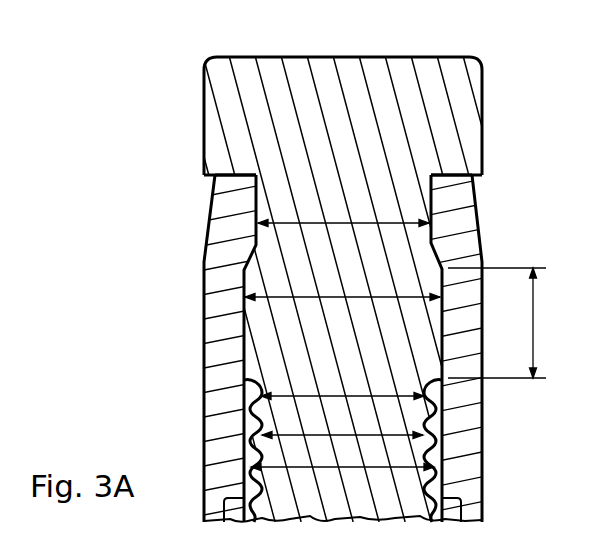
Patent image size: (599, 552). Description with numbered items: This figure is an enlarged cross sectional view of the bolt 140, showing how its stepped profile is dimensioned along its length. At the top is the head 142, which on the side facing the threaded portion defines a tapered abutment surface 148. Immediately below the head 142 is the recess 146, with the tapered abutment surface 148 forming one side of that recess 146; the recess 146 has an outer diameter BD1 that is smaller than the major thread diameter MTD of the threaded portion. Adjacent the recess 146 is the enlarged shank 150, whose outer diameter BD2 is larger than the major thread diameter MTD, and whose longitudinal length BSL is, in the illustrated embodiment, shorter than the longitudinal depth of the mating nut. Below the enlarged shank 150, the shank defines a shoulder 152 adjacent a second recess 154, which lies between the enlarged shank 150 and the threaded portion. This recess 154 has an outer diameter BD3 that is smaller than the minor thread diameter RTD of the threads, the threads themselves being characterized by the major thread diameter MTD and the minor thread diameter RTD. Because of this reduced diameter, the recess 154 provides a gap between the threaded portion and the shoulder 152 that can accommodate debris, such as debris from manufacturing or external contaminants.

The bolt 140 is at (243, 76).
The head 142 is at (398, 75).
The recess 146 is at (474, 240).
The tapered abutment surface 148 is at (213, 203).
The enlarged shank 150 is at (207, 300).
The shoulder 152 is at (262, 386).
The recess 154 is at (252, 405).
The outer diameter of recess BD1 is at (343, 213).
The outer diameter of enlarged shank BD2 is at (342, 288).
The outer diameter of recess BD3 is at (342, 387).
The minor thread diameter RTD is at (342, 424).
The major thread diameter MTD is at (342, 456).
The longitudinal length of enlarged shank BSL is at (510, 323).